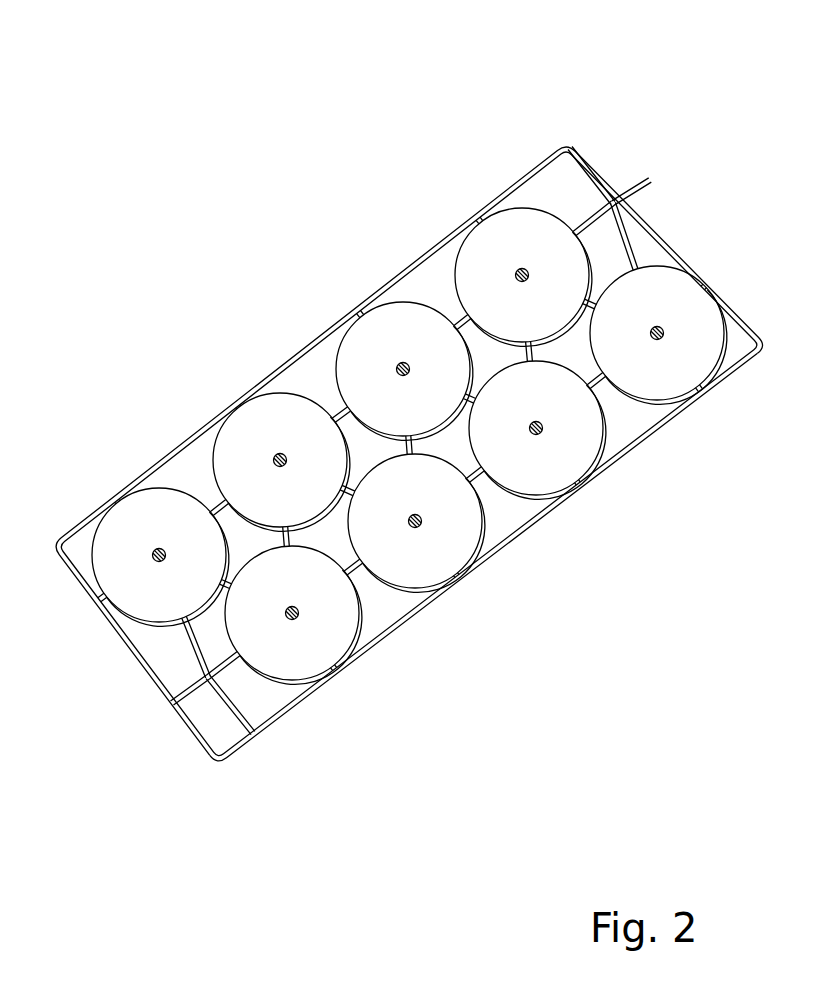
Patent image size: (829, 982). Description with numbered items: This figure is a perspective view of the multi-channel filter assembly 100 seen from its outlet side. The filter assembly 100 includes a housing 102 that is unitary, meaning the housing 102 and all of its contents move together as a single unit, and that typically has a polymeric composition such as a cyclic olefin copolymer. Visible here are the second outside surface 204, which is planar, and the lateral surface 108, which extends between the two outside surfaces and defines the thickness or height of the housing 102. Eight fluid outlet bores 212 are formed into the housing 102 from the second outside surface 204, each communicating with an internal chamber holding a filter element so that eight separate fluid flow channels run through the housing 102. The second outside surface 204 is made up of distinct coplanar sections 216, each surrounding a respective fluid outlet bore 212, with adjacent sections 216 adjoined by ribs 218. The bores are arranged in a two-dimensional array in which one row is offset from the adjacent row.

The filter assembly 100 is at (156, 174).
The housing 102 is at (131, 456).
The lateral surface 108 is at (280, 723).
The second outside surface 204 is at (523, 236).
The fluid outlet bore 212 is at (516, 278).
The section 216 is at (663, 403).
The rib 218 is at (483, 481).